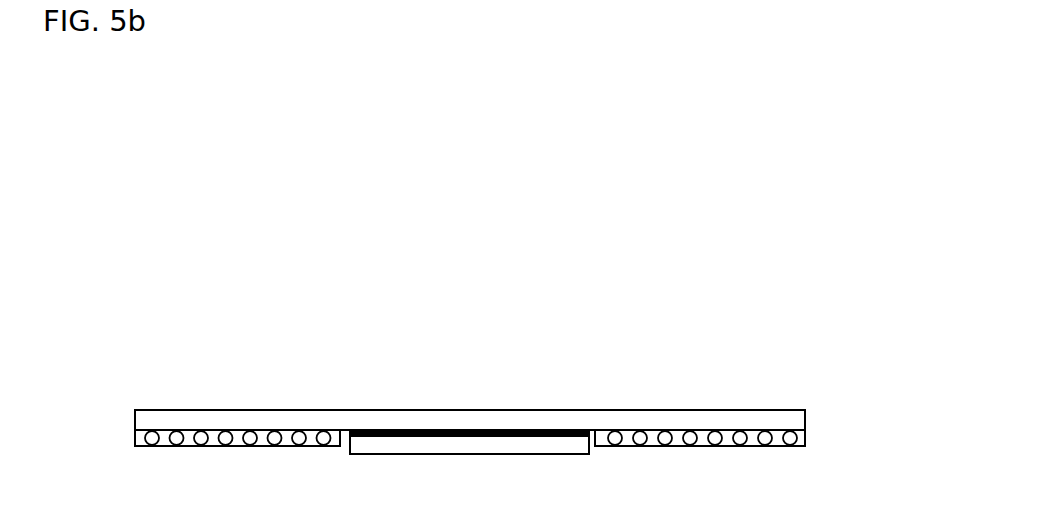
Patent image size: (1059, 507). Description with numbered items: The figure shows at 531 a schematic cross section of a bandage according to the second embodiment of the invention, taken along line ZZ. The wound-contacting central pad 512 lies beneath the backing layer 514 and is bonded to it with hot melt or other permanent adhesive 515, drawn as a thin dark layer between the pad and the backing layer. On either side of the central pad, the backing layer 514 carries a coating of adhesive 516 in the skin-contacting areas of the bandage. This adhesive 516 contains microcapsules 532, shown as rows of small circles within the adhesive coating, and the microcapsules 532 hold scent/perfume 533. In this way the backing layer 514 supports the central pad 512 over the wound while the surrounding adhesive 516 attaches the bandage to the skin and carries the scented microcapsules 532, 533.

The cross section of a bandage 531 is at (675, 270).
The microcapsules 532 is at (647, 433).
The scent/perfume 533 is at (298, 438).
The backing layer 514 is at (227, 422).
The adhesive 516 is at (165, 436).
The wound-contacting central pad 512 is at (377, 443).
The permanent adhesive 515 is at (458, 433).